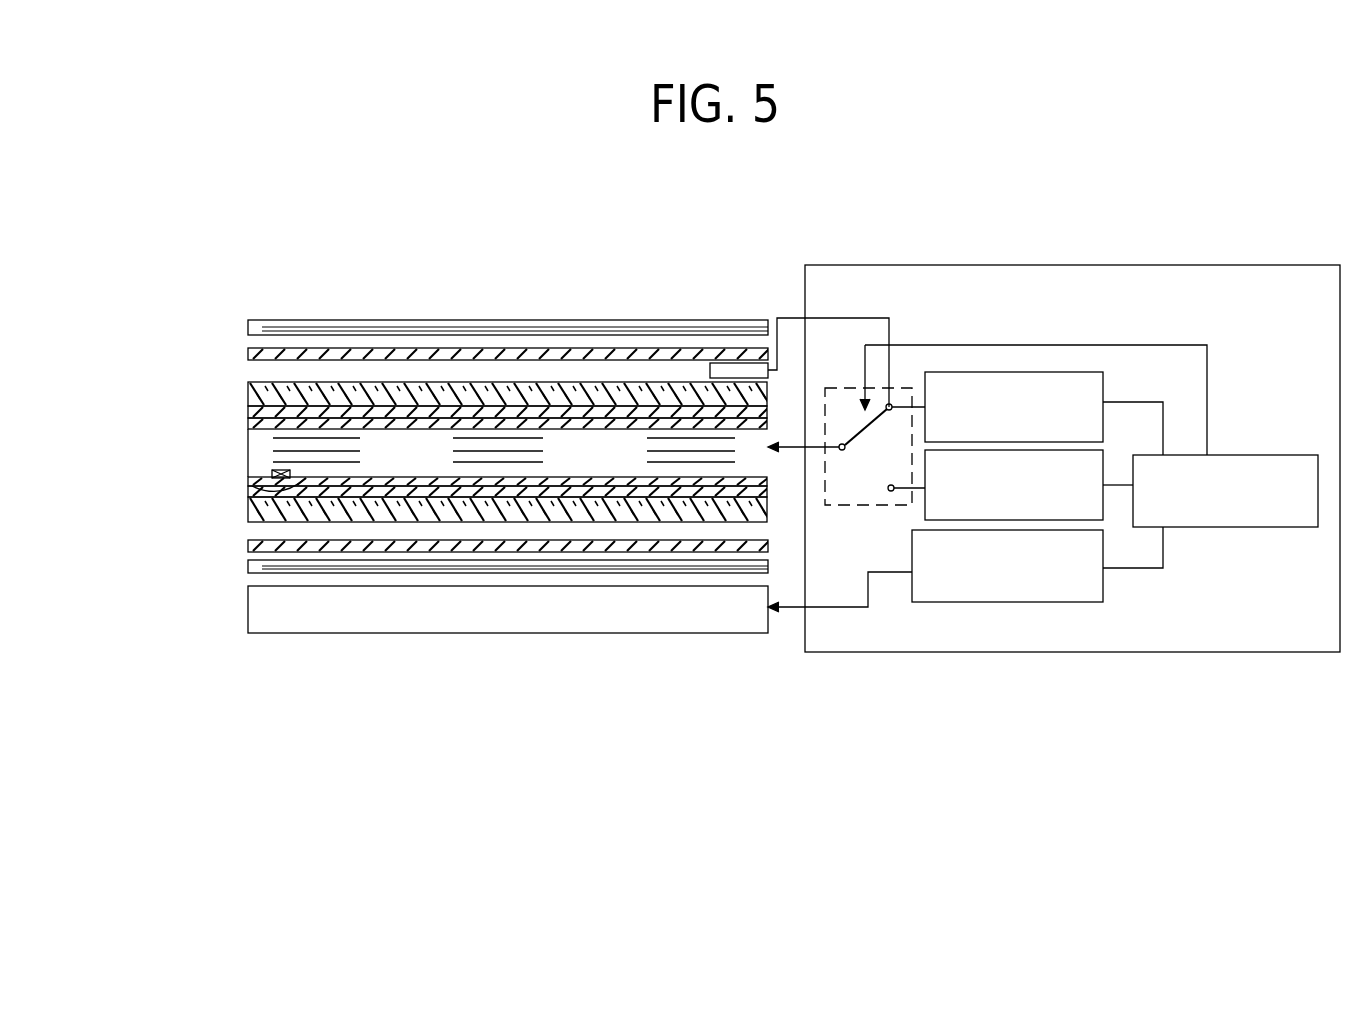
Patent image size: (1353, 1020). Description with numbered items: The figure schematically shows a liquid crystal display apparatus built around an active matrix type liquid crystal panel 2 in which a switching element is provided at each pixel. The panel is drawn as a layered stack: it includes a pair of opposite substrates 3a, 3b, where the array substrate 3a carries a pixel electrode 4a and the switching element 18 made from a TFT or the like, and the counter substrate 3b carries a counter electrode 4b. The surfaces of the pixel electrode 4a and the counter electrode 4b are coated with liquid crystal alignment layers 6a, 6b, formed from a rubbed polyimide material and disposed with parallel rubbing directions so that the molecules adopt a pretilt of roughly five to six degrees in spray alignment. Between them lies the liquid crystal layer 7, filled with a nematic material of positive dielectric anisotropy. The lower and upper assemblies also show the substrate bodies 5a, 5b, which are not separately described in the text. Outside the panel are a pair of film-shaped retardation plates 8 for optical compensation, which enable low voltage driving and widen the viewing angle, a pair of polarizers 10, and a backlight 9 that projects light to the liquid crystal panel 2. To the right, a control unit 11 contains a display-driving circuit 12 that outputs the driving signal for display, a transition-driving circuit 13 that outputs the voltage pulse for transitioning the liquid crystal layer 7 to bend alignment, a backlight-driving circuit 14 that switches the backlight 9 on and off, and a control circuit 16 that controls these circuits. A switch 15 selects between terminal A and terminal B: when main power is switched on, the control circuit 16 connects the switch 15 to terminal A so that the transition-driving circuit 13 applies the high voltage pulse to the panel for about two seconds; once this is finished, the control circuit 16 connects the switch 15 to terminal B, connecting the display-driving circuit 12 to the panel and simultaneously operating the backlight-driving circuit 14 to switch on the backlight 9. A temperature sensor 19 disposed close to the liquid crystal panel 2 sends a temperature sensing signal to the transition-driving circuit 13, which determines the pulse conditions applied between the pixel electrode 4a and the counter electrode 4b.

The liquid crystal panel 2 is at (102, 380).
The array substrate 3a is at (156, 457).
The counter substrate 3b is at (156, 363).
The pixel electrode 4a is at (248, 497).
The counter electrode 4b is at (248, 412).
The lower glass substrate 5a is at (248, 490).
The upper glass substrate 5b is at (248, 395).
The liquid crystal alignment layer 6a is at (248, 518).
The liquid crystal alignment layer 6b is at (248, 422).
The liquid crystal layer 7 is at (248, 444).
The retardation plate 8 is at (248, 352).
The backlight 9 is at (547, 633).
The polarizer 10 is at (402, 318).
The control unit 11 is at (915, 643).
The display-driving circuit 12 is at (1103, 470).
The transition-driving circuit 13 is at (1097, 385).
The backlight-driving circuit 14 is at (957, 603).
The switch 15 is at (868, 507).
The control circuit 16 is at (1217, 527).
The switching element 18 is at (248, 472).
The temperature sensor 19 is at (748, 352).